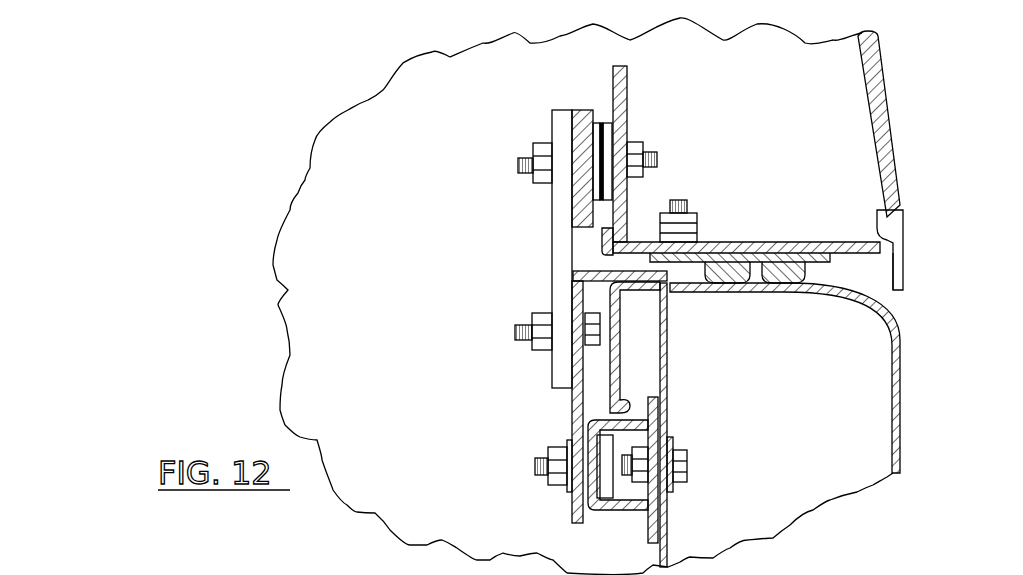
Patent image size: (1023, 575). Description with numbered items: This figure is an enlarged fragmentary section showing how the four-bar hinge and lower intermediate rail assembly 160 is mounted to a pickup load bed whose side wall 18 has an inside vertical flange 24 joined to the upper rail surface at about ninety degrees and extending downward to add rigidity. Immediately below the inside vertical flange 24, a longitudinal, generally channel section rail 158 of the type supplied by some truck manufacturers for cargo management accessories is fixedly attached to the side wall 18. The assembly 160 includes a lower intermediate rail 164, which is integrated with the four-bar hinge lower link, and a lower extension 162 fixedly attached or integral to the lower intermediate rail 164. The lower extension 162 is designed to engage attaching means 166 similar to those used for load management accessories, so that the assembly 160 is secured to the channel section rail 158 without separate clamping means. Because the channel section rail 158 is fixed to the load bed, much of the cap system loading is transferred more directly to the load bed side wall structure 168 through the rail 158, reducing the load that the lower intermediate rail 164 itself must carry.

The side wall 18 is at (898, 390).
The inside vertical flange 24 is at (617, 345).
The channel section rail 158 is at (664, 507).
The 4-bar hinge and lower intermediate rail assembly 160 is at (562, 209).
The lower extension 162 is at (590, 505).
The lower intermediate rail 164 is at (572, 285).
The attaching means 166 is at (595, 443).
The load bed side wall structure 168 is at (664, 383).